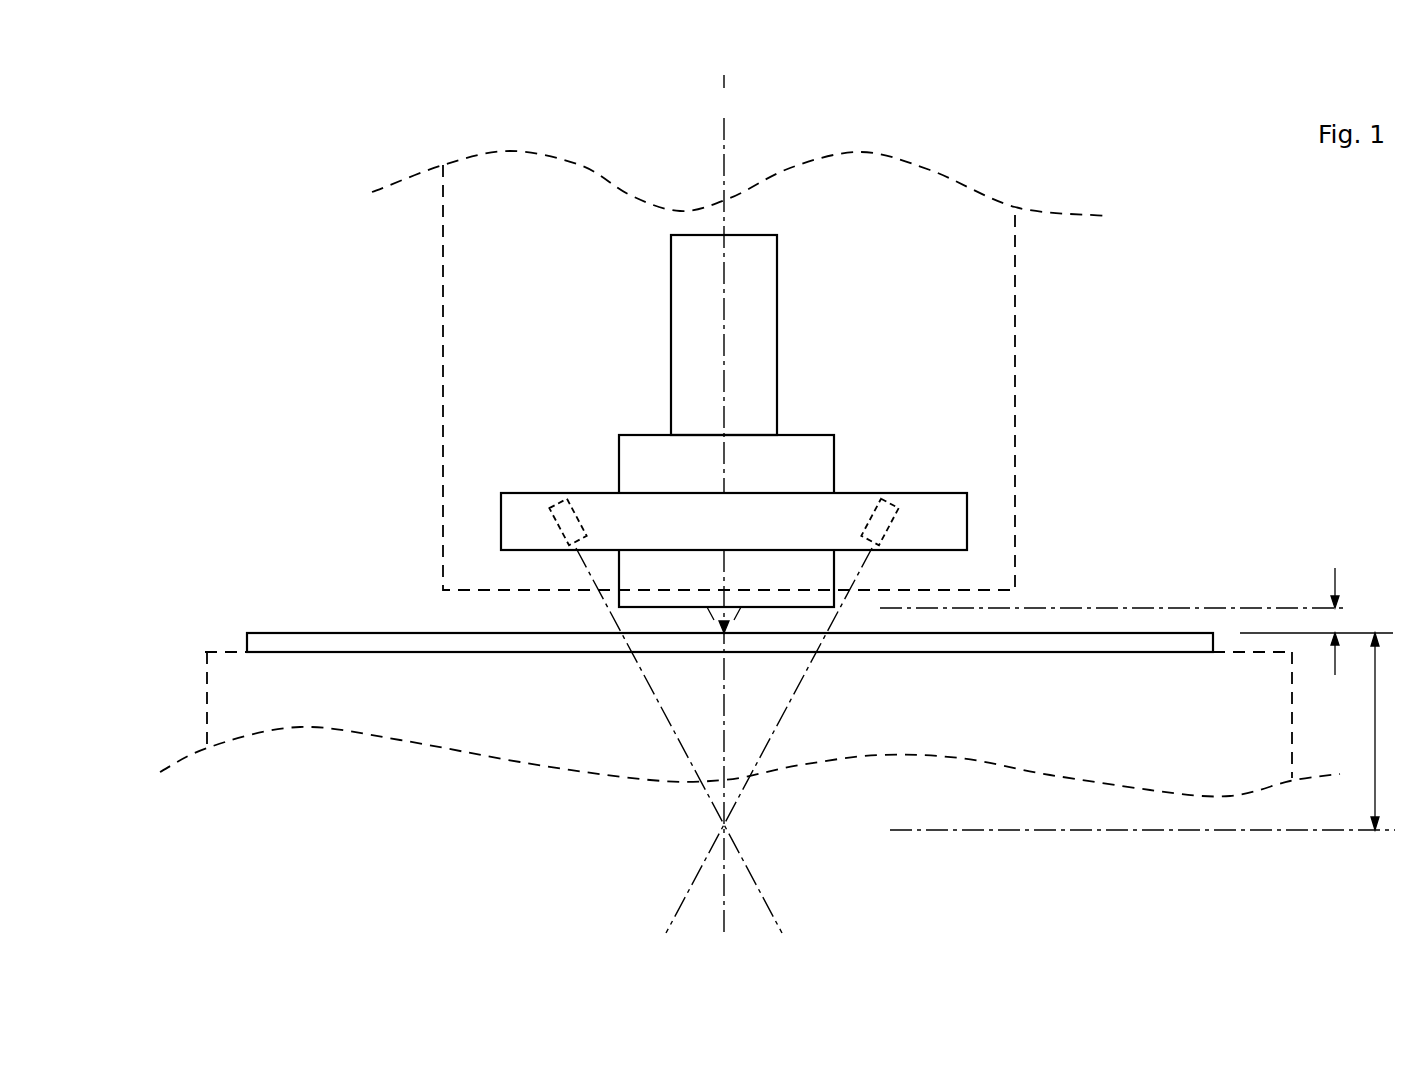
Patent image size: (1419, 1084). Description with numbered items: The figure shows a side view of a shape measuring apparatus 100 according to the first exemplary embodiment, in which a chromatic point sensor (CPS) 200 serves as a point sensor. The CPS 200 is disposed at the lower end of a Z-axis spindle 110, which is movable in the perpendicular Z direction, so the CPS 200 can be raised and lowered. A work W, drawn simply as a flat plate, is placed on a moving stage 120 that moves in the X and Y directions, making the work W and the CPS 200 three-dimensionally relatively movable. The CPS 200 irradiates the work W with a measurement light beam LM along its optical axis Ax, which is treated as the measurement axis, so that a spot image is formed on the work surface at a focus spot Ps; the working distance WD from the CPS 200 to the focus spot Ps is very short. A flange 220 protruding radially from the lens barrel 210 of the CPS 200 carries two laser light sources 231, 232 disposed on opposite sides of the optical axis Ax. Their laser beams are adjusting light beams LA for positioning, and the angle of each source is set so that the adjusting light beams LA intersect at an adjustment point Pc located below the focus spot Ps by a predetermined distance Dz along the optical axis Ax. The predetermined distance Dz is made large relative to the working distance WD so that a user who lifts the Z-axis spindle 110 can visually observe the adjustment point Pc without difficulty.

The shape measuring apparatus 100 is at (735, 542).
The Z-axis spindle 110 is at (455, 268).
The moving stage 120 is at (215, 657).
The chromatic point sensor (CPS) 200 is at (763, 308).
The lens barrel 210 is at (652, 442).
The flange 220 is at (935, 511).
The laser light source 231 is at (558, 500).
The laser light source 232 is at (893, 498).
The optical axis Ax is at (724, 504).
The adjusting light beam LA is at (670, 731).
The measurement light beam LM is at (723, 632).
The focus spot Ps is at (728, 632).
The adjustment point Pc is at (722, 826).
The work W is at (270, 633).
The working distance WD is at (1136, 603).
The predetermined distance Dz is at (1142, 731).